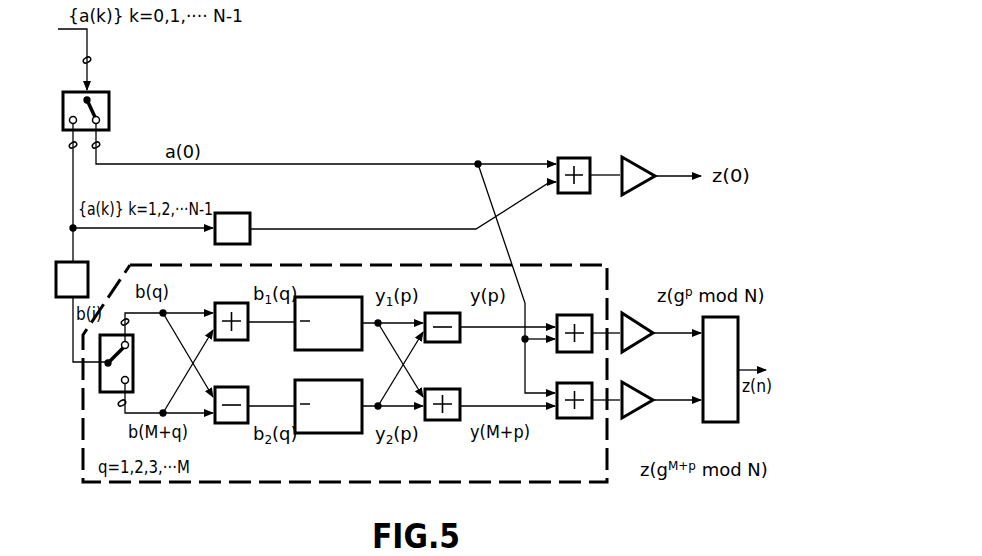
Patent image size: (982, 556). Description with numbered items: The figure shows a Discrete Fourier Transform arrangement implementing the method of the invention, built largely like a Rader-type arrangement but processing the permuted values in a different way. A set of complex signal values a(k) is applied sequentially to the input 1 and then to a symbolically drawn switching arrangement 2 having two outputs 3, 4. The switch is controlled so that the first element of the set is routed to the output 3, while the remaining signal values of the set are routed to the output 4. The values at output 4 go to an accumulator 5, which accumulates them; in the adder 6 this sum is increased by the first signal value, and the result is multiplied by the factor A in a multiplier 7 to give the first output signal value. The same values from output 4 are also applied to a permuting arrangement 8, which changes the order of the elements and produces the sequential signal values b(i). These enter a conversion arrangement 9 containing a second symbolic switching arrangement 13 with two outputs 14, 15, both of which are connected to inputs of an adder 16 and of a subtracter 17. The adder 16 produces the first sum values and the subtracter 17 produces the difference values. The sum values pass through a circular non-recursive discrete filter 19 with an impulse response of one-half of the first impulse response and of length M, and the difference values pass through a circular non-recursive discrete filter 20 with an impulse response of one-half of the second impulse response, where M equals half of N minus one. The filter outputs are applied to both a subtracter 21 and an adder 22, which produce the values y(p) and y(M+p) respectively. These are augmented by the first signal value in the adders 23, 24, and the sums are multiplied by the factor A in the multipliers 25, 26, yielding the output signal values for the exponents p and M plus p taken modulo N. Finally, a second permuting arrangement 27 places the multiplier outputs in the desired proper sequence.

The input 1 is at (91, 59).
The switching arrangement 2 is at (109, 110).
The output 3 is at (100, 145).
The output 4 is at (69, 147).
The accumulator 5 is at (228, 212).
The adder 6 is at (574, 158).
The multiplier 7 is at (637, 157).
The permuting arrangement 8 is at (68, 298).
The conversion arrangement 9 is at (82, 430).
The switching arrangement 13 is at (133, 363).
The output 14 is at (129, 324).
The output 15 is at (126, 404).
The adder 16 is at (232, 303).
The subtracter 17 is at (232, 423).
The circular non-recursive discrete filter 19 is at (343, 292).
The circular non-recursive discrete filter 20 is at (328, 433).
The subtracter 21 is at (442, 313).
The adder 22 is at (442, 420).
The adder 23 is at (574, 315).
The adder 24 is at (574, 418).
The multiplier 25 is at (637, 313).
The multiplier 26 is at (637, 418).
The second permuting arrangement 27 is at (720, 422).